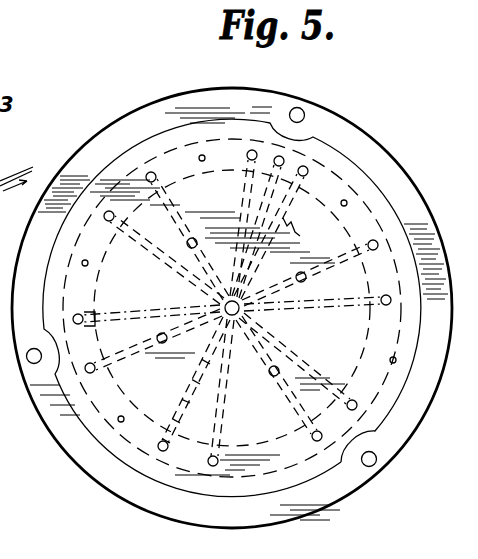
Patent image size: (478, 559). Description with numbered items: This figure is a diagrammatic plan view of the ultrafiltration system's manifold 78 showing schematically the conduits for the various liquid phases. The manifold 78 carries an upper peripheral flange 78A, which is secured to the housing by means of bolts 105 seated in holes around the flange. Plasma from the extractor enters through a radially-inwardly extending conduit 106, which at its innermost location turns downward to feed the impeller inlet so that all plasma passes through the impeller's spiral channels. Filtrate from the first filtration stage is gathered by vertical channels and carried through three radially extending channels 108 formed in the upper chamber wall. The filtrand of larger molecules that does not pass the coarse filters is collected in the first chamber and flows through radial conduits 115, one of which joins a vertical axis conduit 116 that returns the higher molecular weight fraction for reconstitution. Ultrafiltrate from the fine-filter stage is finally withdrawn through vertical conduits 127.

The manifold 78 is at (215, 524).
The upper peripheral flange 78A is at (83, 453).
The bolts 105 is at (32, 364).
The radially-inwardly extending conduit 106 is at (284, 172).
The radially extending channels 108 is at (173, 204).
The radial conduits 115 is at (110, 312).
The vertical axis conduit 116 is at (269, 377).
The vertical conduits 127 is at (0, 485).